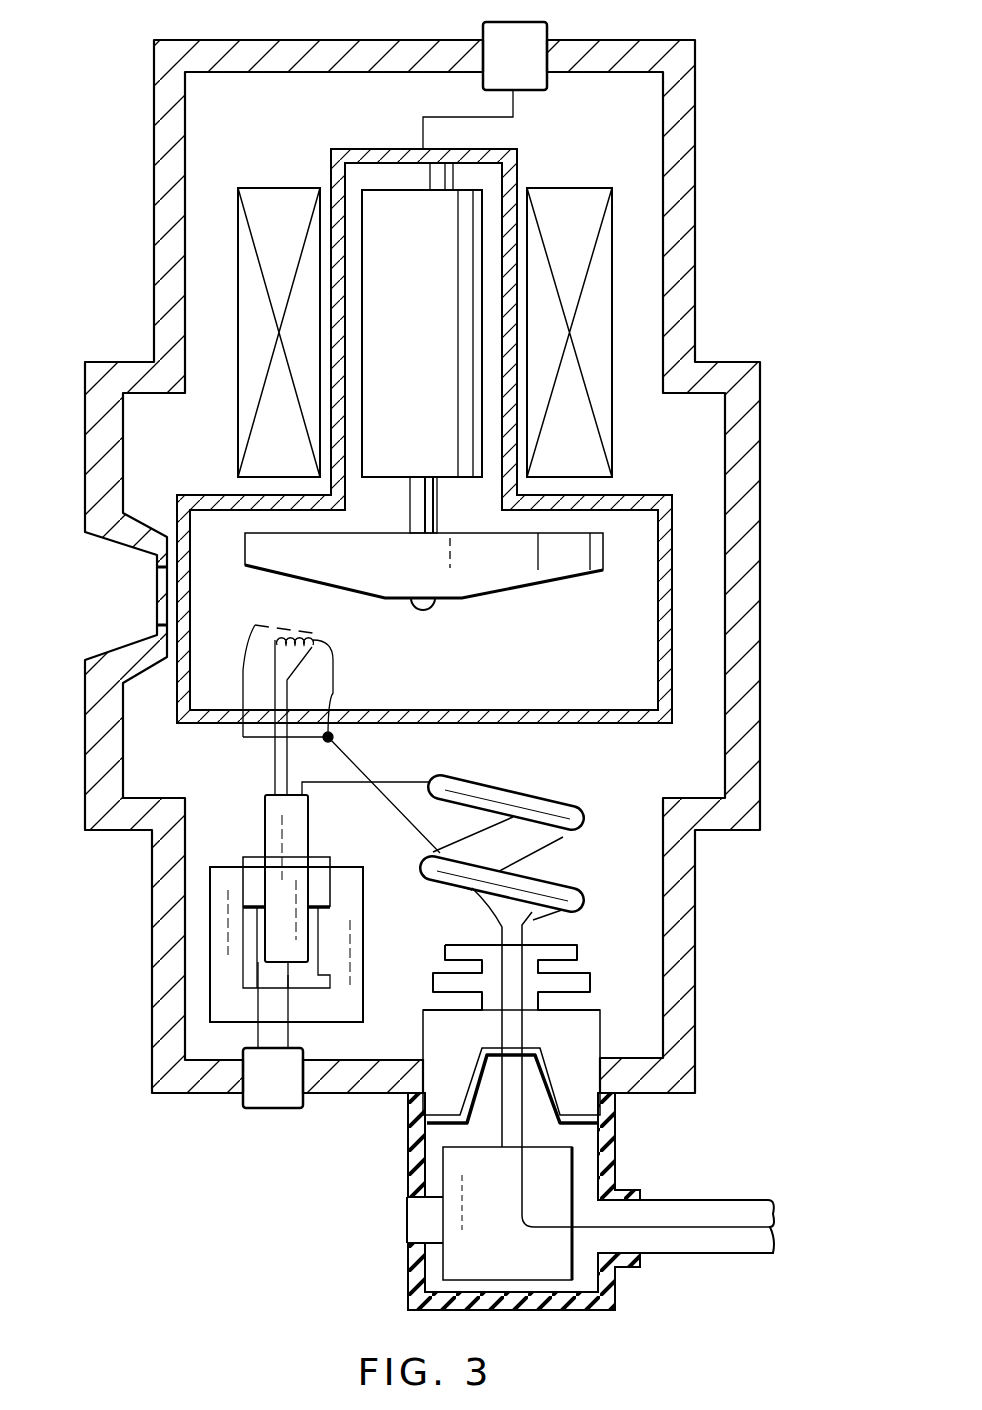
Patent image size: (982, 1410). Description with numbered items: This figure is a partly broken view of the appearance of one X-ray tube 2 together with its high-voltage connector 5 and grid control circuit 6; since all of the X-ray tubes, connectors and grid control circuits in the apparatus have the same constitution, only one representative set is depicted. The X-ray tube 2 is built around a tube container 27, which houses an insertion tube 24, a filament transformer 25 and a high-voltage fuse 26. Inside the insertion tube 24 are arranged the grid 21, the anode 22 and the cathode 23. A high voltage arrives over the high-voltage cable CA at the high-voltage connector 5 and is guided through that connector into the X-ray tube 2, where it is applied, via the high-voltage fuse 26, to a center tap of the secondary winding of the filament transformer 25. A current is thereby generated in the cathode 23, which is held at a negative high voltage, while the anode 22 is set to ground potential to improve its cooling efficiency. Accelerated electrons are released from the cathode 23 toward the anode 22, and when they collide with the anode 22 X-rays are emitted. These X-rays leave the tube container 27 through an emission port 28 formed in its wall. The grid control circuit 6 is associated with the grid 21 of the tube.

The X-ray tube 2 is at (450, 674).
The high-voltage connector 5 is at (618, 1150).
The grid control circuit 6 is at (455, 1180).
The grid 21 is at (307, 632).
The anode 22 is at (510, 575).
The cathode 23 is at (307, 663).
The insertion tube 24 is at (660, 497).
The filament transformer 25 is at (217, 965).
The high-voltage fuse 26 is at (550, 805).
The tube container 27 is at (752, 632).
The emission port 28 is at (162, 595).
The high-voltage cable CA is at (716, 1258).